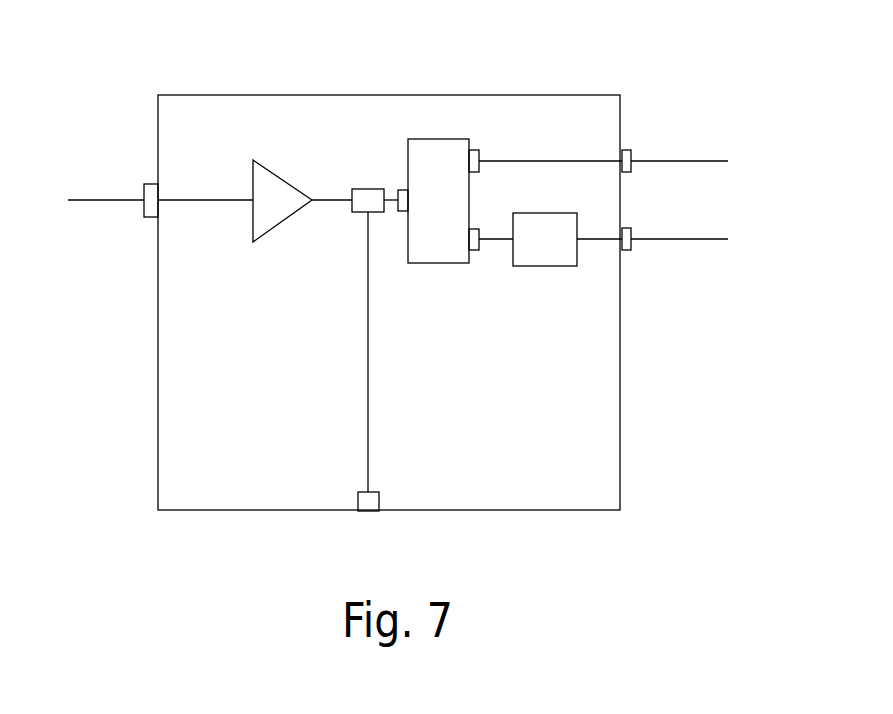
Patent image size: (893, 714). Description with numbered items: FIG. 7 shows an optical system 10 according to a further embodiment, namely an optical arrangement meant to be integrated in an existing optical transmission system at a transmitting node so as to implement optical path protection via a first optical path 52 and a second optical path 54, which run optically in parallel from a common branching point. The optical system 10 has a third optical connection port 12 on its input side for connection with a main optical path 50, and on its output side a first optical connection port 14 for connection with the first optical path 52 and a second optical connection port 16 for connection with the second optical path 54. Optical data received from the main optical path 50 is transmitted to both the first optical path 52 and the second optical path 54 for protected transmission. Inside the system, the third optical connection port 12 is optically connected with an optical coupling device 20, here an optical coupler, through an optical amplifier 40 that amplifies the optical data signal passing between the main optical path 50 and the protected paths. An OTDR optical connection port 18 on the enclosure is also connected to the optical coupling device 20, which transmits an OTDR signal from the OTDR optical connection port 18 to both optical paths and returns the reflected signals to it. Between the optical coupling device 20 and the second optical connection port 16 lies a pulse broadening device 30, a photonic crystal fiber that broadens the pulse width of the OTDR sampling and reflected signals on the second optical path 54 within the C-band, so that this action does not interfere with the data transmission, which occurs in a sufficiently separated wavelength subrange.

The optical system 10 is at (290, 70).
The third optical connection port 12 is at (143, 207).
The first optical connection port 14 is at (624, 150).
The second optical connection port 16 is at (624, 250).
The OTDR optical connection port 18 is at (380, 505).
The optical coupling device 20 is at (437, 138).
The pulse broadening device 30 is at (548, 213).
The optical amplifier 40 is at (262, 157).
The main optical path 50 is at (107, 200).
The first optical path 52 is at (705, 161).
The second optical path 54 is at (705, 240).